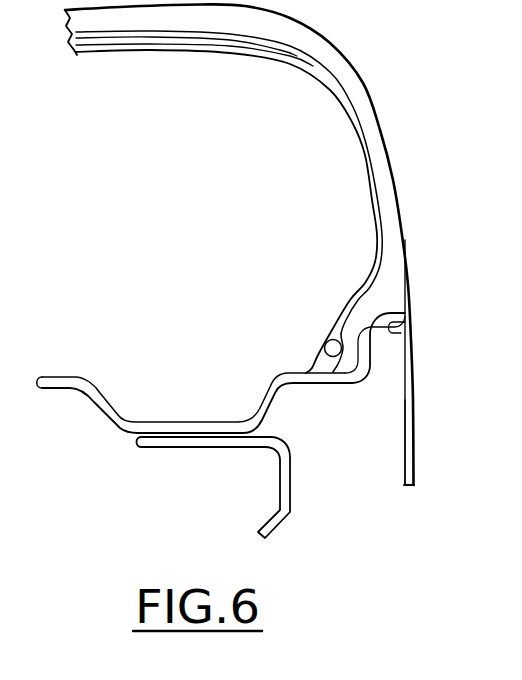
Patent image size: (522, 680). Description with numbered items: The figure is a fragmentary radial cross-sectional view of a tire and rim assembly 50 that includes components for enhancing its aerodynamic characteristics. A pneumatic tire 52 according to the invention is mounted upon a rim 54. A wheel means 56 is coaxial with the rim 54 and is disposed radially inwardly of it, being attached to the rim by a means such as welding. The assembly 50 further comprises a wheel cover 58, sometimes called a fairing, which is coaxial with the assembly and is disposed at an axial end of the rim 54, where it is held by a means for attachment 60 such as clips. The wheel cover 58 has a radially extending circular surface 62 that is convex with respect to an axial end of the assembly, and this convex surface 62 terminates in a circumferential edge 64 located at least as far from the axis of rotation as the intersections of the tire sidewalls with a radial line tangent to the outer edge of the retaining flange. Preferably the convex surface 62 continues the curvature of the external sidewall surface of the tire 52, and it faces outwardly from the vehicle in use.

The assembly 50 is at (124, 160).
The pneumatic tire 52 is at (345, 80).
The rim 54 is at (73, 383).
The wheel means 56 is at (273, 470).
The wheel cover 58 is at (414, 463).
The means for attachment 60 is at (392, 334).
The radially extending circular surface 62 is at (414, 384).
The circumferential edge 64 is at (402, 236).